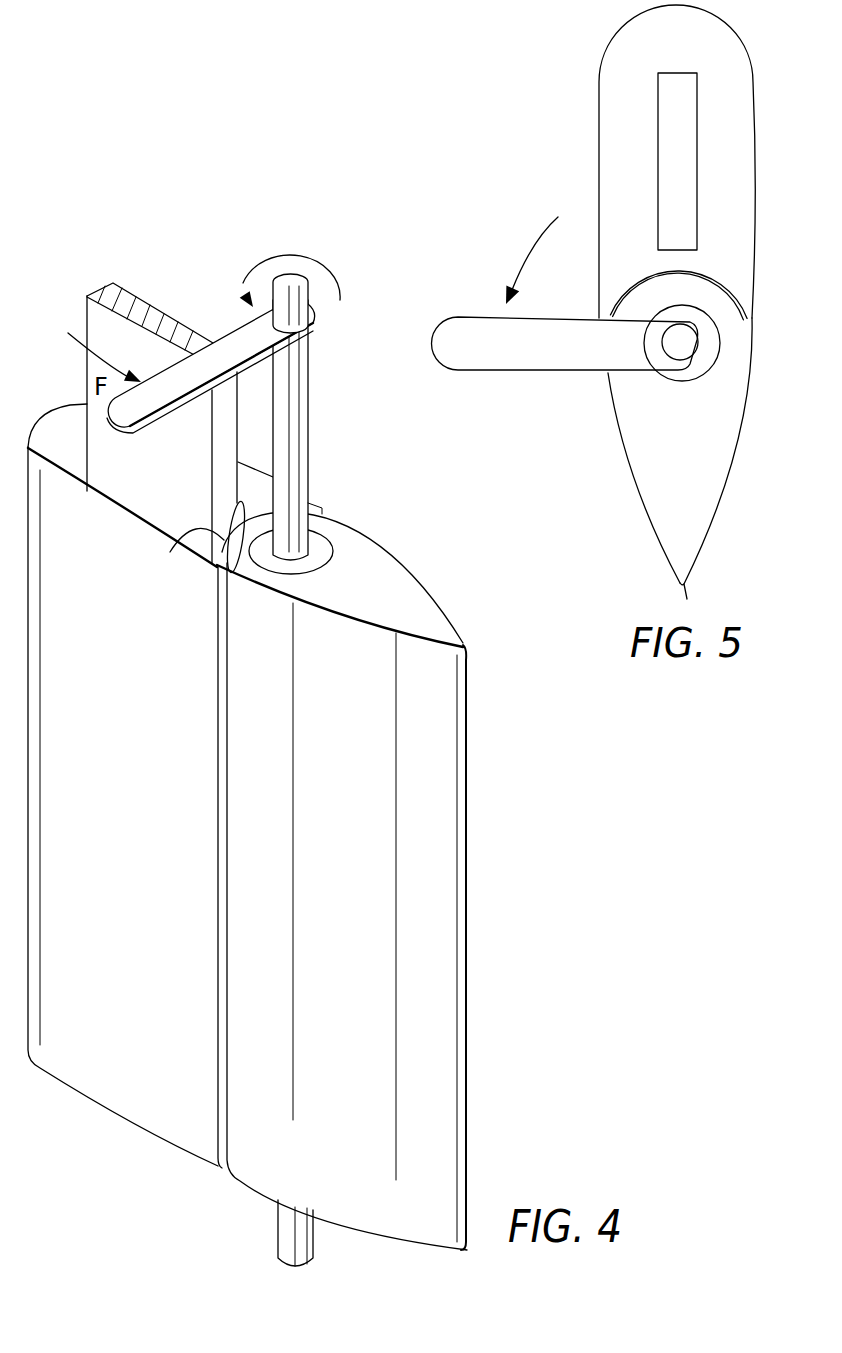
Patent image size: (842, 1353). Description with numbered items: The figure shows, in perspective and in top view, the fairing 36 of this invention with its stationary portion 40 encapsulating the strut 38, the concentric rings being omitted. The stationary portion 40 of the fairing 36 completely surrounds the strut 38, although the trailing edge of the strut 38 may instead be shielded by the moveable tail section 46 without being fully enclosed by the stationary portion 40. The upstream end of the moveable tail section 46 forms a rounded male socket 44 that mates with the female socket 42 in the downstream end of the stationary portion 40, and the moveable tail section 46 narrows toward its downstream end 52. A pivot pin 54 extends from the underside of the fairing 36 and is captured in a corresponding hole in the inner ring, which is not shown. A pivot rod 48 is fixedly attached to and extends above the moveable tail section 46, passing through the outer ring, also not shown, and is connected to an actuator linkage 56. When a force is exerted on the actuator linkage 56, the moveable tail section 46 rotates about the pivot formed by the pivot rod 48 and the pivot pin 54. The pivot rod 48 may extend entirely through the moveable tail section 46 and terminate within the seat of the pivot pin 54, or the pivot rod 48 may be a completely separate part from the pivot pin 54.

In FIG. 4, the fairing 36 is at (100, 1130).
In FIG. 4, the strut 38 is at (137, 302).
In FIG. 5, the strut 38 is at (689, 152).
In FIG. 4, the stationary portion 40 is at (120, 752).
In FIG. 5, the stationary portion 40 is at (740, 232).
In FIG. 4, the female socket 42 is at (178, 548).
In FIG. 4, the male socket 44 is at (240, 578).
In FIG. 4, the moveable tail section 46 is at (353, 857).
In FIG. 5, the moveable tail section 46 is at (688, 483).
In FIG. 4, the pivot rod 48 is at (297, 432).
In FIG. 5, the pivot rod 48 is at (683, 347).
In FIG. 4, the downstream end 52 is at (467, 986).
In FIG. 5, the downstream end 52 is at (687, 599).
In FIG. 4, the pivot pin 54 is at (287, 1230).
In FIG. 4, the actuator linkage 56 is at (150, 406).
In FIG. 5, the actuator linkage 56 is at (512, 371).